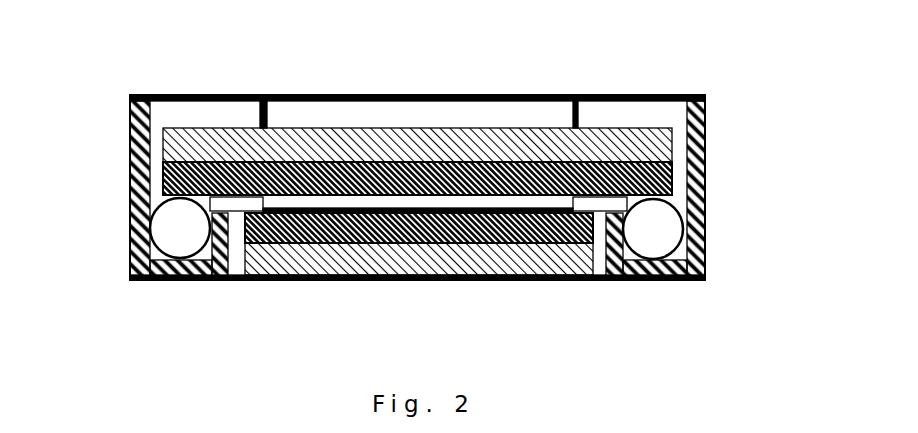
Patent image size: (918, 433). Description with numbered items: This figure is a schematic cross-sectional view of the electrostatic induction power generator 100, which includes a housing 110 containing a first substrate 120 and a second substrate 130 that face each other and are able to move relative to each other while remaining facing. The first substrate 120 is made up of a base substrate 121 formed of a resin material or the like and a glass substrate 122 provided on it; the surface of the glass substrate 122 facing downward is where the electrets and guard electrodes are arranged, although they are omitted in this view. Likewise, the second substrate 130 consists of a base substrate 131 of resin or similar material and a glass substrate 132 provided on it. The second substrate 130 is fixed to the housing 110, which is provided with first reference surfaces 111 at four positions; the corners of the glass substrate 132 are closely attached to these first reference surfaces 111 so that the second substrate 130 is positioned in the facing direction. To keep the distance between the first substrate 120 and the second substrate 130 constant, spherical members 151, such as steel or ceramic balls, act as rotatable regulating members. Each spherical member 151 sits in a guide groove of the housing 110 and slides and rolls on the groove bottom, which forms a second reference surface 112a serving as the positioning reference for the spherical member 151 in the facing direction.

The electrostatic induction power generator 100 is at (709, 67).
The housing 110 is at (704, 177).
The first reference surface 111 is at (278, 252).
The second reference surface 112a is at (180, 257).
The first substrate 120 is at (216, 111).
The base substrate 121 is at (303, 138).
The glass substrate 122 is at (472, 172).
The second substrate 130 is at (253, 289).
The base substrate 131 is at (560, 252).
The glass substrate 132 is at (388, 232).
The spherical member 151 is at (165, 222).